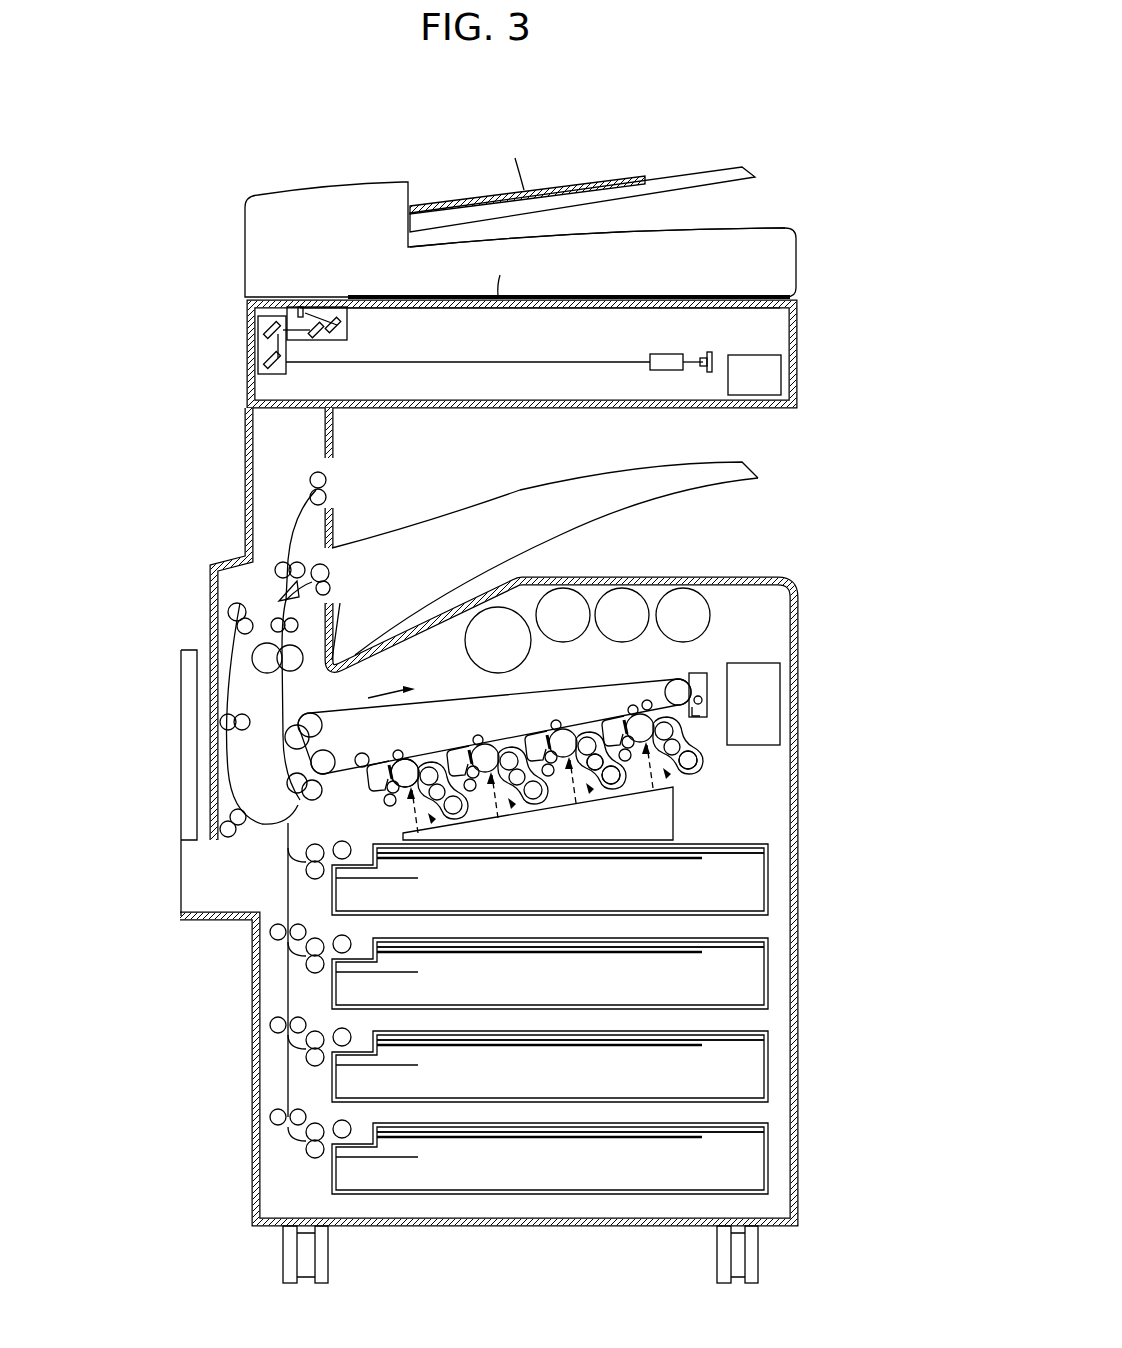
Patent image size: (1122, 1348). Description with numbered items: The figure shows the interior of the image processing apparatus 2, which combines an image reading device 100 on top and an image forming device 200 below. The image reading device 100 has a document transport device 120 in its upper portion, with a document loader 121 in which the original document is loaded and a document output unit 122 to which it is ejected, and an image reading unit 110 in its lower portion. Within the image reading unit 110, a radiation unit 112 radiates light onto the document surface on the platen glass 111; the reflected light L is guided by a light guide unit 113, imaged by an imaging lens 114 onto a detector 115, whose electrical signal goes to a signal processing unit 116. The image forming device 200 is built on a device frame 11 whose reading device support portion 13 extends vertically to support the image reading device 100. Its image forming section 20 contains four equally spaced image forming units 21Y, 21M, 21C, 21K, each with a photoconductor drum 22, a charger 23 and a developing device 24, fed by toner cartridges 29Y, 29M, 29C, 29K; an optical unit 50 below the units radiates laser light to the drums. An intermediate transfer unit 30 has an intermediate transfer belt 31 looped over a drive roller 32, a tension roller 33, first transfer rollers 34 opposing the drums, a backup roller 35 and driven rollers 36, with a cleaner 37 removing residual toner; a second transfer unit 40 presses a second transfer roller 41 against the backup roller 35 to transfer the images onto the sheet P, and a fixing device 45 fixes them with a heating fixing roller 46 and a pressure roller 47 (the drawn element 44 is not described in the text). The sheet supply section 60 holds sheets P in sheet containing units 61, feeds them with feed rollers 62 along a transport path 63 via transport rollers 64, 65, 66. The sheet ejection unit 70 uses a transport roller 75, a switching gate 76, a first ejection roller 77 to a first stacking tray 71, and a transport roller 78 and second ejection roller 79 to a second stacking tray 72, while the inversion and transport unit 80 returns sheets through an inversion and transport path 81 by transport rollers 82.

The image processing apparatus 2 is at (182, 153).
The image reading device 100 is at (130, 240).
The image reading unit 110 is at (220, 379).
The document transport device 120 is at (220, 266).
The document loader 121 is at (690, 168).
The document output unit 122 is at (578, 232).
The platen glass 111 is at (574, 308).
The radiation unit 112 is at (364, 330).
The light guide unit 113 is at (302, 378).
The imaging lens 114 is at (655, 354).
The detector 115 is at (703, 352).
The signal processing unit 116 is at (772, 368).
The light L is at (498, 357).
The image forming device 200 is at (220, 468).
The reading device support portion 13 is at (246, 436).
The device frame 11 is at (799, 625).
The image forming section 20 is at (730, 612).
The image forming unit for black 21K is at (430, 815).
The image forming unit for cyan 21C is at (508, 820).
The image forming unit for magenta 21M is at (588, 815).
The image forming unit for yellow 21Y is at (687, 790).
The photoconductor drum 22 is at (403, 785).
The charger 23 is at (637, 773).
The developing device 24 is at (717, 767).
The toner cartridge for black 29K is at (497, 605).
The toner cartridge for cyan 29C is at (563, 588).
The toner cartridge for magenta 29M is at (623, 588).
The toner cartridge for yellow 29Y is at (683, 588).
The intermediate transfer unit 30 is at (431, 680).
The intermediate transfer belt 31 is at (352, 712).
The drive roller 32 is at (688, 680).
The tension roller 33 is at (313, 758).
The first transfer roller 34 is at (399, 750).
The backup roller 35 is at (313, 716).
The driven roller 36 is at (362, 753).
The cleaner 37 is at (708, 703).
The second transfer unit 40 is at (276, 715).
The second transfer roller 41 is at (287, 744).
The developing roller 44 is at (587, 777).
The fixing device 45 is at (238, 660).
The heating fixing roller 46 is at (335, 647).
The pressure roller 47 is at (252, 645).
The optical unit 50 is at (678, 830).
The sheet supply section 60 is at (276, 1155).
The sheet containing unit 61 is at (757, 876).
The feed roller 62 is at (348, 860).
The transport path 63 is at (288, 882).
The transport roller 64 is at (316, 879).
The transport roller 65 is at (270, 935).
The transport roller 66 is at (320, 793).
The sheet ejection unit 70 is at (260, 536).
The first stacking tray 71 is at (437, 598).
The second stacking tray 72 is at (537, 485).
The transport roller 75 is at (297, 620).
The switching gate 76 is at (278, 592).
The first ejection roller 77 is at (330, 570).
The transport roller 78 is at (225, 563).
The second ejection roller 79 is at (326, 478).
The inversion and transport unit 80 is at (195, 752).
The inversion and transport path 81 is at (192, 780).
The transport roller 82 is at (228, 612).
The sheet P is at (738, 846).